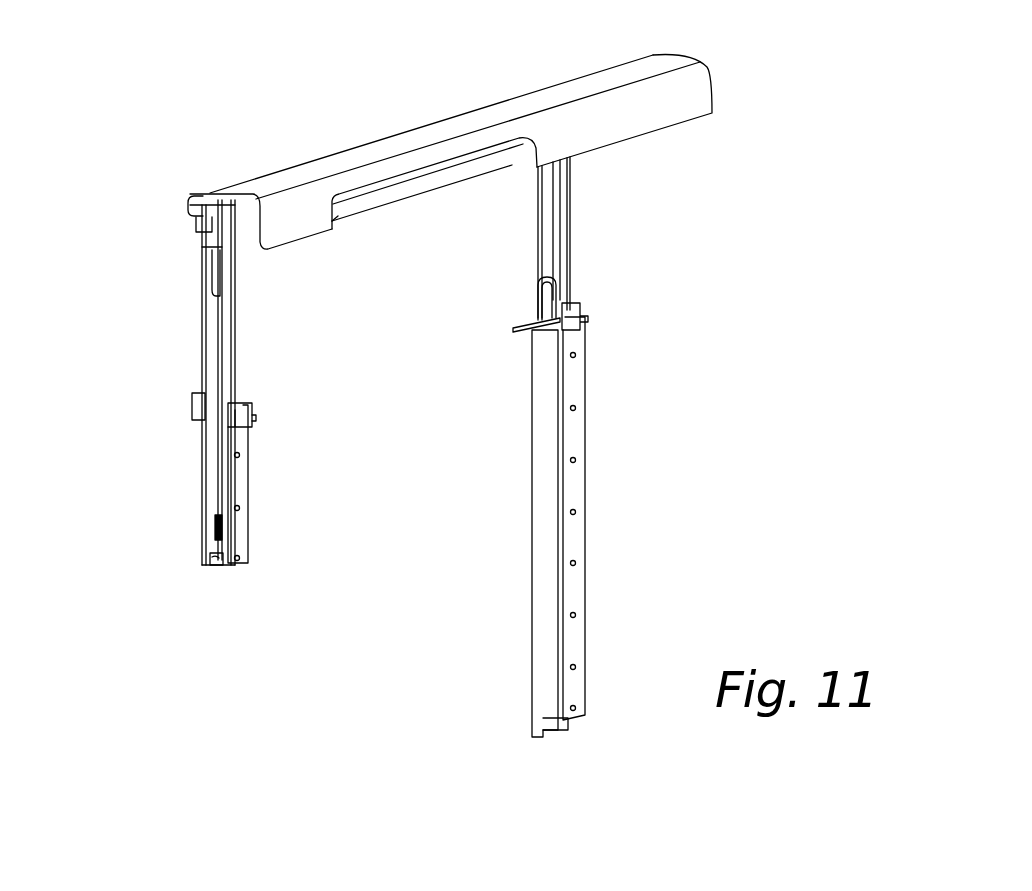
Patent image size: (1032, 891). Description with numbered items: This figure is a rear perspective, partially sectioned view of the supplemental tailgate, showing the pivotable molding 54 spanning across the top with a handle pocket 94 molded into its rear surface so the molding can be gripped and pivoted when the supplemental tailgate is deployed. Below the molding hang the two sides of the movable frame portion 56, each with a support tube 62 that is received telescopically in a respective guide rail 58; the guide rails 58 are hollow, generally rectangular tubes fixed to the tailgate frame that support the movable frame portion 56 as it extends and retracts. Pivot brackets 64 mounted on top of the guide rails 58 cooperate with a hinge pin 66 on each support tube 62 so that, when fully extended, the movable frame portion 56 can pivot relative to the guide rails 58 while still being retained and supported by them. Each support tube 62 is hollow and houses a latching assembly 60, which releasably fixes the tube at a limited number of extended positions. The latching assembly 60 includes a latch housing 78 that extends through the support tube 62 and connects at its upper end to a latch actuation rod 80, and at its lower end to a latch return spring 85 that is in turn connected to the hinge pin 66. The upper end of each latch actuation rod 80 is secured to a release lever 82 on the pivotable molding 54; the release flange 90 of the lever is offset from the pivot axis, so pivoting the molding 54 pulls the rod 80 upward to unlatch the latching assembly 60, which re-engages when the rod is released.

The pivotable molding 54 is at (451, 173).
The movable frame portion 56 is at (649, 235).
The guide rails 58 is at (248, 492).
The latching assemblies 60 is at (141, 385).
The support tubes 62 is at (573, 228).
The pivot brackets 64 is at (243, 390).
The hinge pin 66 is at (207, 559).
The latch housings 78 is at (207, 302).
The latch actuation rods 80 is at (213, 253).
The release levers 82 is at (187, 200).
The latch return springs 85 is at (215, 532).
The release flange 90 is at (197, 220).
The handle pocket 94 is at (333, 217).